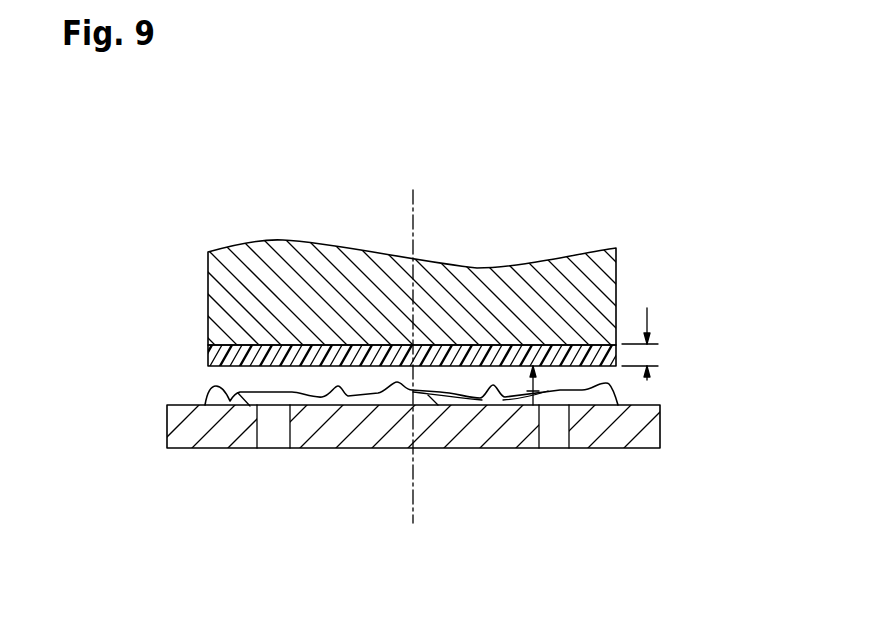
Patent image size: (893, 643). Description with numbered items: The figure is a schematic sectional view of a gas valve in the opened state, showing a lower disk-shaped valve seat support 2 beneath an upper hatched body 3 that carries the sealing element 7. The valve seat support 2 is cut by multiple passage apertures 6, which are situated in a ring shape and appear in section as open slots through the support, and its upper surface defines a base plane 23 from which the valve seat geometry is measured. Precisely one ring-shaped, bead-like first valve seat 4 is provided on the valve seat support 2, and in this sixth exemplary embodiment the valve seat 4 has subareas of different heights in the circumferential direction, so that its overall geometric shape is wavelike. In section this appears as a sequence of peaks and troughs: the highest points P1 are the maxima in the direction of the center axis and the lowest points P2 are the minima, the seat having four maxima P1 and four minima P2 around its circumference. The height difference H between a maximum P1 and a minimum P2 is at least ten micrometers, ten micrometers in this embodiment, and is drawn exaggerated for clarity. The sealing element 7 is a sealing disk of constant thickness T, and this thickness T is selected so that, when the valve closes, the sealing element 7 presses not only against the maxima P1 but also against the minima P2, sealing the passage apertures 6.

The valve seat support 2 is at (180, 433).
The cover body 3 is at (605, 268).
The first valve seat 4 is at (237, 394).
The passage apertures 6 is at (268, 435).
The sealing element 7 is at (207, 357).
The base plane 23 is at (447, 395).
The highest point P1 is at (205, 390).
The lowest point P2 is at (339, 387).
The height difference H is at (535, 368).
The thickness T is at (647, 344).